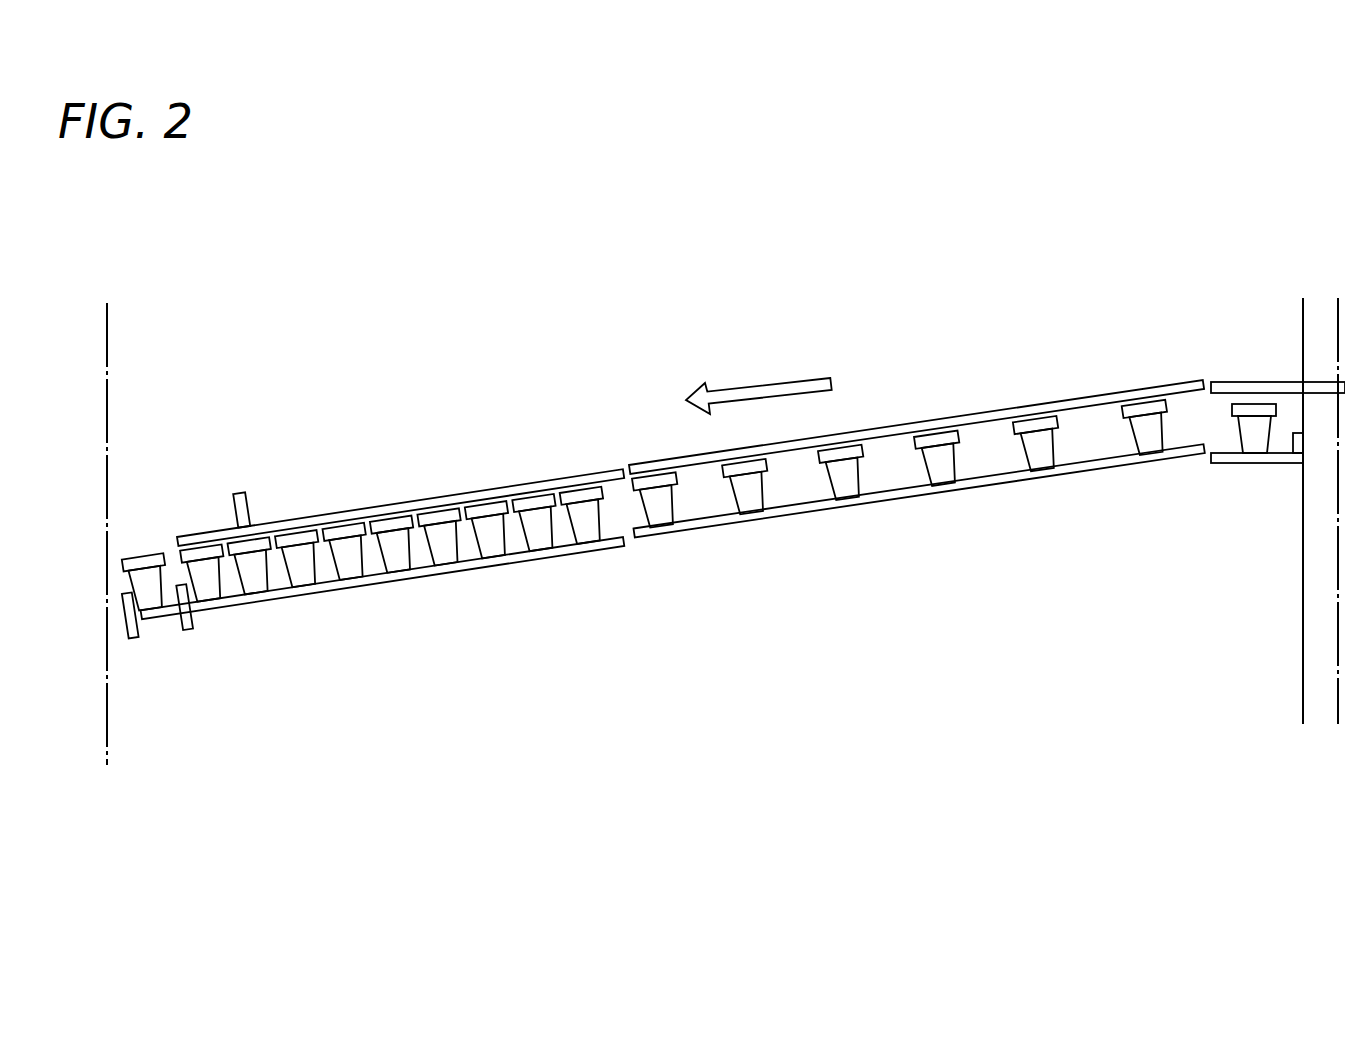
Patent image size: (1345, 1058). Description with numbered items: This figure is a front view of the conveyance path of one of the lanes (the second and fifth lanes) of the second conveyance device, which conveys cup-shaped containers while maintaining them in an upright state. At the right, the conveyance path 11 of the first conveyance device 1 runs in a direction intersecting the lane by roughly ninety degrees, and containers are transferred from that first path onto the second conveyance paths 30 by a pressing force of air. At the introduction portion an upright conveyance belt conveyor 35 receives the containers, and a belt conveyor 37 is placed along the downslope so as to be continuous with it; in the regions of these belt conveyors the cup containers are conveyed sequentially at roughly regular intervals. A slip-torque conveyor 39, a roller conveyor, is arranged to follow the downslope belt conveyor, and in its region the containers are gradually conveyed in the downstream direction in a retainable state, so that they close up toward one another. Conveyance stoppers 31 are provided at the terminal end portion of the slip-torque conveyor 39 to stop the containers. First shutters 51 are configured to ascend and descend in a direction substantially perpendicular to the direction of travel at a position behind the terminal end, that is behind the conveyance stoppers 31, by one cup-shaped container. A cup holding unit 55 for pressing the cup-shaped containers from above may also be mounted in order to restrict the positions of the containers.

The first conveyance device 1 is at (1302, 353).
The conveyance path of the first conveyance device 11 is at (1325, 727).
The second conveyance paths 30 is at (638, 567).
The conveyance stoppers 31 is at (133, 640).
The upright conveyance belt conveyor 35 is at (1255, 465).
The downslope belt conveyor 37 is at (797, 517).
The slip-torque conveyor 39 is at (359, 590).
The first shutters 51 is at (182, 585).
The cup holding unit 55 is at (243, 490).